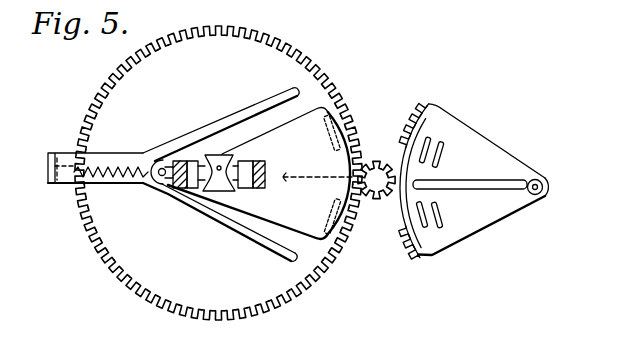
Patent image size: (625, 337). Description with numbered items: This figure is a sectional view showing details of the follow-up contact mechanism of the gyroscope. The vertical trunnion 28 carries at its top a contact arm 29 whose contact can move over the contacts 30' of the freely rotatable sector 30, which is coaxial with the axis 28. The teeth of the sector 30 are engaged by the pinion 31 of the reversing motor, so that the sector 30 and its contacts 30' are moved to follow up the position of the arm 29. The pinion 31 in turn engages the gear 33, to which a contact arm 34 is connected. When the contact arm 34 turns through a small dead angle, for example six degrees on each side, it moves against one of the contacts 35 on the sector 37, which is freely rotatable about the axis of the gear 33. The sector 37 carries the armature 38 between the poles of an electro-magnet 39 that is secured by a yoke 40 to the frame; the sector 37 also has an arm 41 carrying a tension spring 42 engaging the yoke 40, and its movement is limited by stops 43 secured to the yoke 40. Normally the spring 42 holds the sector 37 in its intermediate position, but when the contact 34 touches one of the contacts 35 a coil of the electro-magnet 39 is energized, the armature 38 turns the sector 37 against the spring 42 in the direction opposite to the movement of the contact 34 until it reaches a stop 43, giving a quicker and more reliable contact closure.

The vertical trunnion 28 is at (544, 198).
The contact arm 29 is at (465, 181).
The freely rotatable sector 30 is at (473, 181).
The contacts 30' is at (453, 188).
The pinion 31 is at (374, 200).
The gear 33 is at (93, 100).
The contact arm 34 is at (312, 180).
The contacts 35 is at (346, 116).
The sector 37 is at (270, 218).
The armature 38 is at (188, 200).
The electro-magnet 39 is at (260, 161).
The yoke 40 is at (62, 186).
The arm 41 is at (160, 183).
The tension spring 42 is at (115, 156).
The stops 43 is at (301, 91).